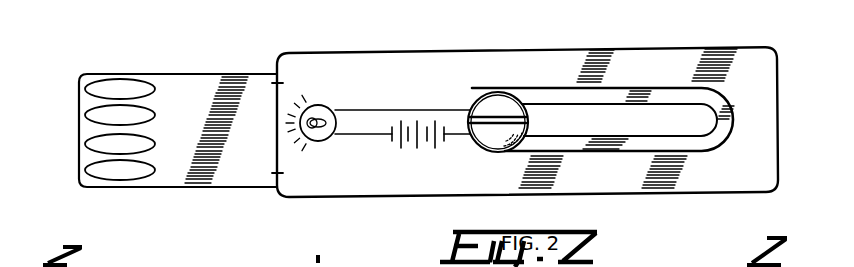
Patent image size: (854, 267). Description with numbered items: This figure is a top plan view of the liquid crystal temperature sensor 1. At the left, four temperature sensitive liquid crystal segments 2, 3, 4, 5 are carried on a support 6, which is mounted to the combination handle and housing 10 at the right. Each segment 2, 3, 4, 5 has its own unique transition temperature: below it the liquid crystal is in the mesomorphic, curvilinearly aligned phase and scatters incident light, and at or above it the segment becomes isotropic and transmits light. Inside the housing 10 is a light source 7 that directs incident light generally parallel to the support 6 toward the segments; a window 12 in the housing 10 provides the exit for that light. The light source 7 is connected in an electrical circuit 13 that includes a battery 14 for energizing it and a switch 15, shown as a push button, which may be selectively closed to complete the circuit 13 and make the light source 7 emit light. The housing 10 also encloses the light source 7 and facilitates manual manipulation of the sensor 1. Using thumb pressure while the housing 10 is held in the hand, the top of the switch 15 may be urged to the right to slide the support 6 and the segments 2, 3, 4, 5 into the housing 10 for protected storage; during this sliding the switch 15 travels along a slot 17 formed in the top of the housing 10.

The liquid crystal temperature sensor 1 is at (286, 41).
The temperature sensitive liquid crystal segment 2 is at (90, 171).
The temperature sensitive liquid crystal segment 3 is at (90, 144).
The temperature sensitive liquid crystal segment 4 is at (90, 114).
The temperature sensitive liquid crystal segment 5 is at (90, 90).
The support 6 is at (163, 188).
The light source 7 is at (316, 141).
The combination handle and housing 10 is at (372, 52).
The window 12 is at (277, 97).
The electrical circuit 13 is at (393, 109).
The battery 14 is at (409, 148).
The switch 15 is at (494, 107).
The slot 17 is at (560, 118).